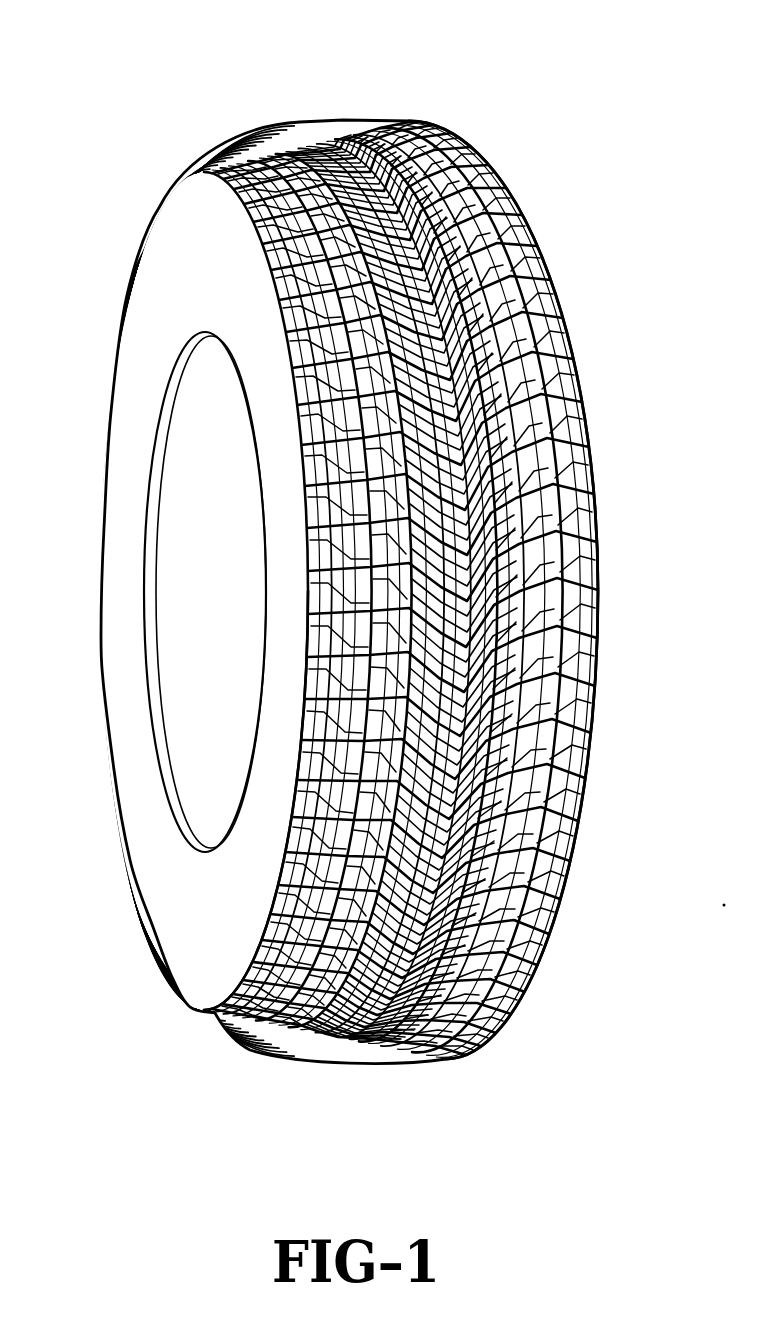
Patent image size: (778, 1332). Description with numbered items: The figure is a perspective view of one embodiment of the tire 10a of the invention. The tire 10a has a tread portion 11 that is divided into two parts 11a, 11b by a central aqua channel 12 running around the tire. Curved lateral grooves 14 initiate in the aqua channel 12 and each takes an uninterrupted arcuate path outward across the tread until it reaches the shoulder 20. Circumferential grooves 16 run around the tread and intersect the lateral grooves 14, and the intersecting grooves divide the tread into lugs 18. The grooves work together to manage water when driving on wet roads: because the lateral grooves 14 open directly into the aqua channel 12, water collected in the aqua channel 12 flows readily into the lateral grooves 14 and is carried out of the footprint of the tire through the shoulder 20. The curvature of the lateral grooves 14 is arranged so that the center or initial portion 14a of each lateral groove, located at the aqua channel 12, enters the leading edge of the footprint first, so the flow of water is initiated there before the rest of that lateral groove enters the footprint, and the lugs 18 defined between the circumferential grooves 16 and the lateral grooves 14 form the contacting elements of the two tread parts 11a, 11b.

The tire 10a is at (146, 1069).
The tread portion 11 is at (330, 82).
The first tread part 11a is at (490, 1007).
The second tread part 11b is at (328, 1003).
The aqua channel 12 is at (395, 1057).
The curved lateral grooves 14 is at (570, 530).
The center or initial portion of lateral groove 14a is at (457, 320).
The circumferential grooves 16 is at (535, 360).
The lugs 18 is at (567, 445).
The shoulder 20 is at (203, 177).